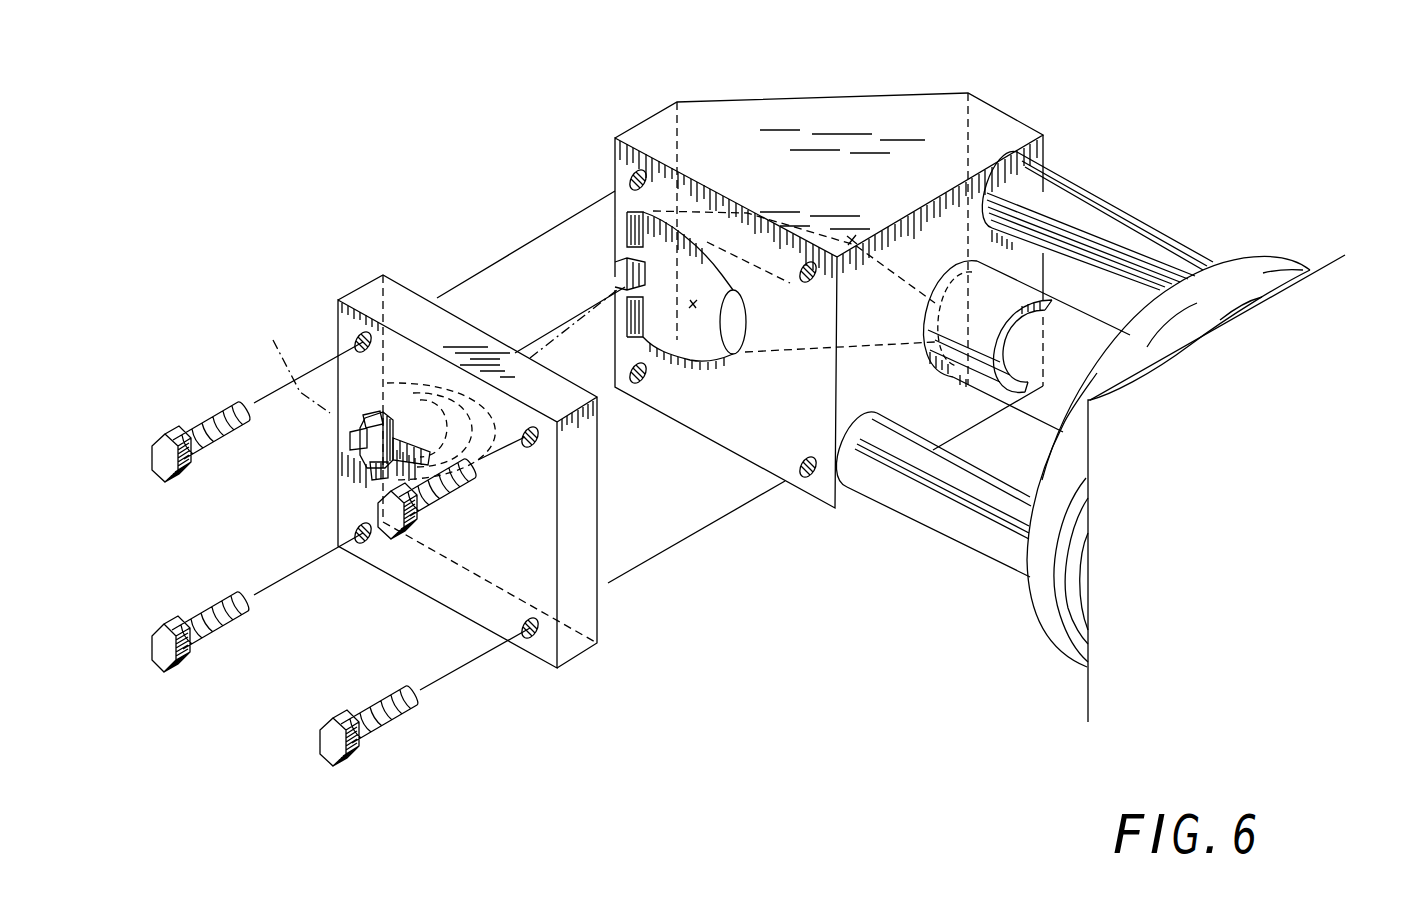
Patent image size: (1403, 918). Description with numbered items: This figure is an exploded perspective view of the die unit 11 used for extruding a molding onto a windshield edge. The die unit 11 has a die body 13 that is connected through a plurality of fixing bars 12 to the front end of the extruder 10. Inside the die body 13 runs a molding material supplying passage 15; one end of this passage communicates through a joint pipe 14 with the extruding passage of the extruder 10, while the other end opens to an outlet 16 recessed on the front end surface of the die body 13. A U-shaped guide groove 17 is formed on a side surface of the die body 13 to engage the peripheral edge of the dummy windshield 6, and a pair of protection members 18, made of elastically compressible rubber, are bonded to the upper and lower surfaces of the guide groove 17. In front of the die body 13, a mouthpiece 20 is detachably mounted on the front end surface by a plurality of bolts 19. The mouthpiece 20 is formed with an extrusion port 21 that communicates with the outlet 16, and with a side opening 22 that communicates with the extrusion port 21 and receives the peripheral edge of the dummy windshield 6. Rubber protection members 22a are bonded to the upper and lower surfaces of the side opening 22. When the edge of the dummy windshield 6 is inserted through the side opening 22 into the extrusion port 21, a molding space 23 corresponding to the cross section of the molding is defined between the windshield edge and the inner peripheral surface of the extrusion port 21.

The dummy windshield 6 is at (433, 351).
The extruder 10 is at (1335, 243).
The die unit 11 is at (773, 544).
The fixing bars 12 is at (1063, 193).
The die body 13 is at (784, 120).
The joint pipe 14 is at (972, 375).
The molding material supplying passage 15 is at (855, 236).
The outlet 16 is at (700, 352).
The U-shaped guide groove 17 is at (626, 282).
The protection members 18 is at (628, 278).
The bolts 19 is at (183, 475).
The mouthpiece 20 is at (458, 605).
The extrusion port 21 is at (362, 480).
The side opening 22 is at (357, 437).
The protection members 22a is at (347, 419).
The molding space 23 is at (398, 427).